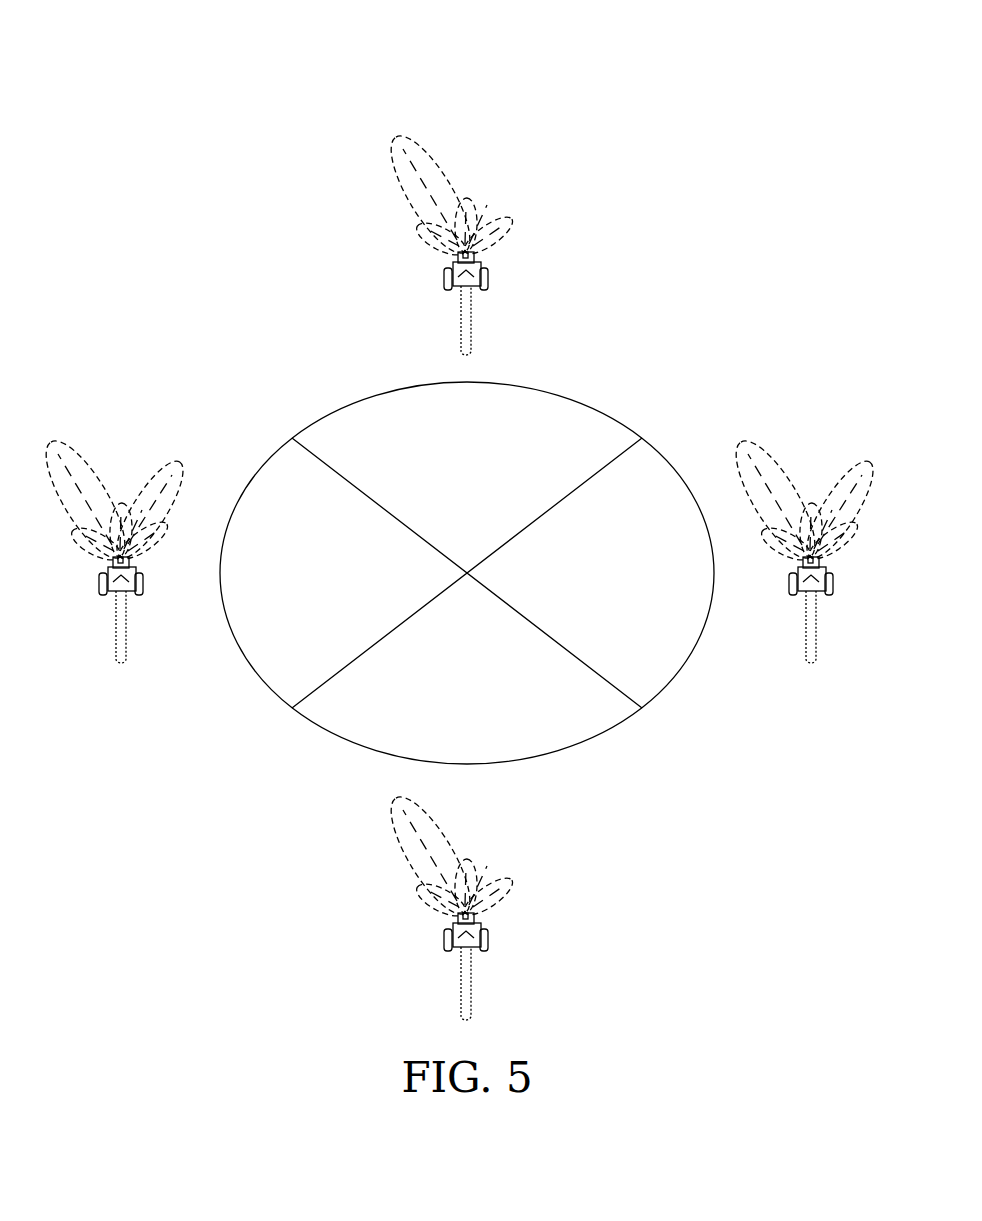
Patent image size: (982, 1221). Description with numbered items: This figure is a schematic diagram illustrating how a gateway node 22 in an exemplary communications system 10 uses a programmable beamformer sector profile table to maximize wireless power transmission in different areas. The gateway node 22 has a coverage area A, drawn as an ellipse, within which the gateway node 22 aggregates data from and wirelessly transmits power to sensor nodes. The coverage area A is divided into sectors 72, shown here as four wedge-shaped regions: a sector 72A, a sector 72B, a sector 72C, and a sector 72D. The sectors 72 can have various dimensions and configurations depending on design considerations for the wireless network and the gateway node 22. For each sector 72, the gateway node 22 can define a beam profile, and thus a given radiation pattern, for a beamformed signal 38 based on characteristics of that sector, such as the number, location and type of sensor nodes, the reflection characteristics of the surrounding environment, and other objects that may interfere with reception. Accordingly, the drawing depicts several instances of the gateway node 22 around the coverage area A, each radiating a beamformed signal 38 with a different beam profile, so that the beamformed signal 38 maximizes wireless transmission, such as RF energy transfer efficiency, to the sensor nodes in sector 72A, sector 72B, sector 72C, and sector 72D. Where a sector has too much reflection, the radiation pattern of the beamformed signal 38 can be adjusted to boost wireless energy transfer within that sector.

The communications system 10 is at (210, 78).
The gateway node 22 is at (116, 628).
The beamformed signal 38 is at (505, 188).
The sectors 72 is at (338, 392).
The sector 72A is at (491, 494).
The sector 72B is at (615, 591).
The sector 72C is at (491, 685).
The sector 72D is at (368, 591).
The coverage area A is at (593, 401).